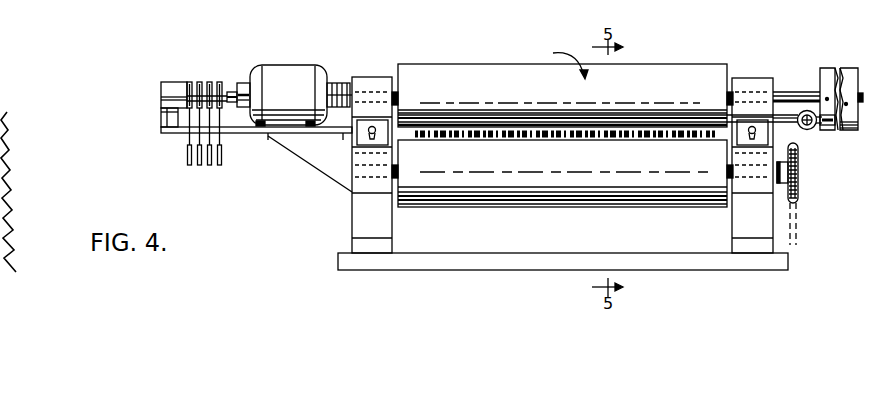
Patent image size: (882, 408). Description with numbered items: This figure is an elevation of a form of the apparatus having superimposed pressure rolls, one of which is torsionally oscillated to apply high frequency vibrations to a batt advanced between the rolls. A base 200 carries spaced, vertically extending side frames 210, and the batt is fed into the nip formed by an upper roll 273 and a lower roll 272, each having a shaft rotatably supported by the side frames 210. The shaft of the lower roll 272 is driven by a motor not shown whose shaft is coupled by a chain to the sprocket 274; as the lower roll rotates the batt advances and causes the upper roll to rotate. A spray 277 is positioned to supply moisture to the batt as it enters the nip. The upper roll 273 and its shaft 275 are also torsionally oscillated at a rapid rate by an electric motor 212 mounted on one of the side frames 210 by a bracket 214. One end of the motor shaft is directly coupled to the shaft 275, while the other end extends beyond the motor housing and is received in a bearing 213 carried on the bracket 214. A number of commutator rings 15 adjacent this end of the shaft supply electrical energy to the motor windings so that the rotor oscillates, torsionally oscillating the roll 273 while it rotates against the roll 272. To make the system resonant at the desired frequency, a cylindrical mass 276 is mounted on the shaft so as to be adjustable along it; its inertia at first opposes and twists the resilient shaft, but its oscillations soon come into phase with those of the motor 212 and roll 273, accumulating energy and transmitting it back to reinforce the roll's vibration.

The commutator rings 15 is at (208, 82).
The base 200 is at (347, 260).
The side frames 210 is at (352, 219).
The electric motor 212 is at (302, 75).
The bearing 213 is at (167, 86).
The bracket 214 is at (305, 160).
The lower roll 272 is at (470, 178).
The upper roll 273 is at (437, 82).
The sprocket 274 is at (798, 187).
The shaft 275 is at (236, 82).
The cylindrical mass 276 is at (852, 78).
The spray 277 is at (467, 123).